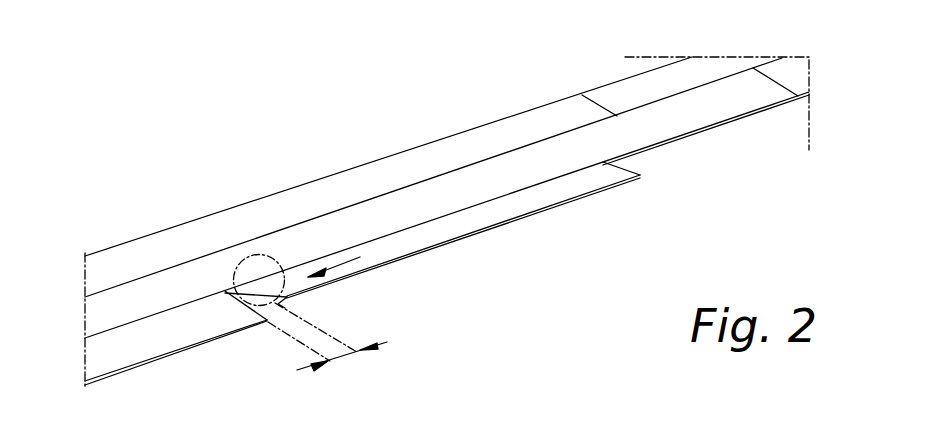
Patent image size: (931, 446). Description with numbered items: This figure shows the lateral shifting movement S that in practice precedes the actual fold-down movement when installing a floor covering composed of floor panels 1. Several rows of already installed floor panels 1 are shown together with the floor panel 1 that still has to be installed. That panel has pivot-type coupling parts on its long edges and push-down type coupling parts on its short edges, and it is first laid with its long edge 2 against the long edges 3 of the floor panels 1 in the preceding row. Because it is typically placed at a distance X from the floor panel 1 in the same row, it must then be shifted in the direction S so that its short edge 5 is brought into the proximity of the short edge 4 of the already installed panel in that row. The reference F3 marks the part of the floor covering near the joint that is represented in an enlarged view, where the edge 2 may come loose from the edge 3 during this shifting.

The floor panel 1 is at (620, 93).
The long edge 2 is at (484, 206).
The long edge 3 is at (287, 266).
The short edge 4 is at (624, 172).
The short edge 5 is at (278, 304).
The shifting movement S is at (352, 263).
The distance X is at (327, 342).
The enlarged-view region F3 is at (235, 282).